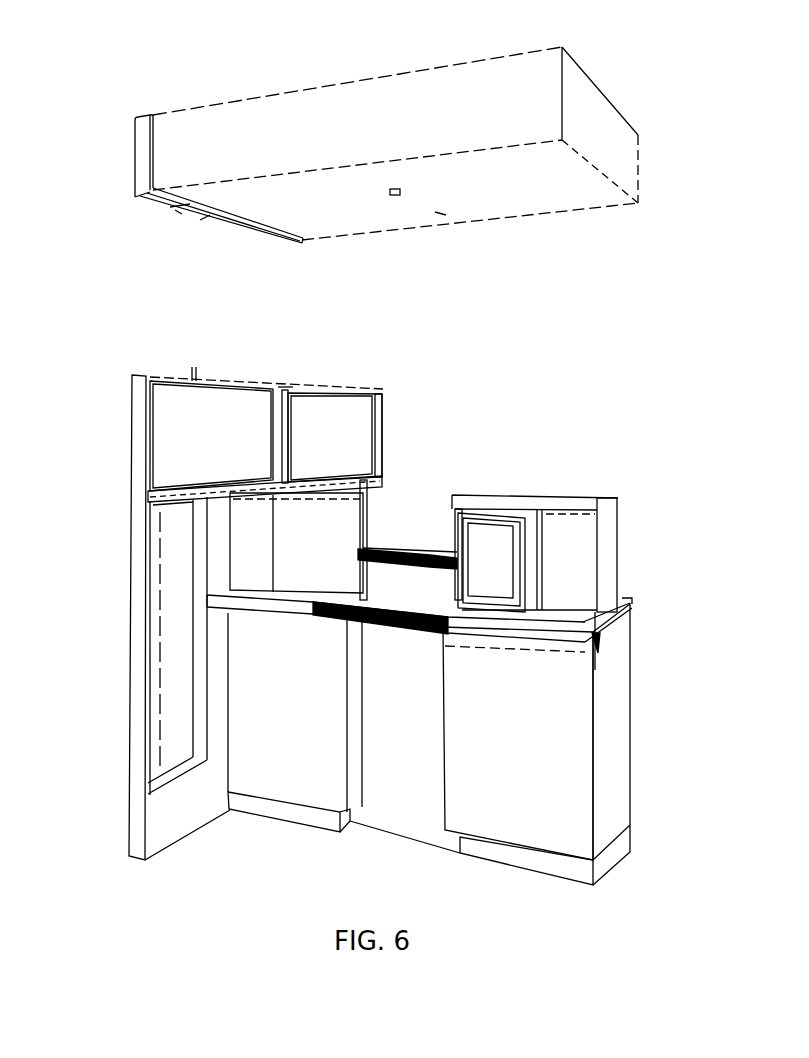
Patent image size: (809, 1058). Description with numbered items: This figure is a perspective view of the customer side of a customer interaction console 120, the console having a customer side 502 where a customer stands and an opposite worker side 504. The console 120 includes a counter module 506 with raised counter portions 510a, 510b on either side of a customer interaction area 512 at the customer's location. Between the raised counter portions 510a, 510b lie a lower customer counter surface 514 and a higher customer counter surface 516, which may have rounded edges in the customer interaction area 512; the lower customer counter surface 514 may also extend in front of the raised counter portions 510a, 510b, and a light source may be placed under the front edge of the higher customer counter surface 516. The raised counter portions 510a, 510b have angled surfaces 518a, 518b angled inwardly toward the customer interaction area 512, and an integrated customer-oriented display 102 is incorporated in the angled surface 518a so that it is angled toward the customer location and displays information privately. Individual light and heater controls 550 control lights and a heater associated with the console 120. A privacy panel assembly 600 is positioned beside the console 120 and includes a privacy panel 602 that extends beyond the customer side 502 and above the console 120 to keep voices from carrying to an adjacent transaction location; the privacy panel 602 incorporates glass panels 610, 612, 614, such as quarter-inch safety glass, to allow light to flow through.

The light and heater controls 550 is at (613, 127).
The privacy panel assembly 600 is at (214, 339).
The glass panel 612 is at (180, 392).
The glass panel 610 is at (345, 408).
The raised counter portion 510b is at (302, 488).
The privacy panel 602 is at (135, 475).
The glass panel 614 is at (180, 602).
The angled surface 518b is at (310, 528).
The customer interaction area 512 is at (426, 476).
The higher customer counter surface 516 is at (425, 550).
The lower customer counter surface 514 is at (348, 600).
The raised counter portion 510a is at (597, 500).
The angled surface 518a is at (533, 523).
The customer-oriented display 102 is at (493, 580).
The worker side 504 is at (666, 520).
The counter module 506 is at (620, 663).
The customer side 502 is at (298, 873).
The customer interaction console 120 is at (700, 385).